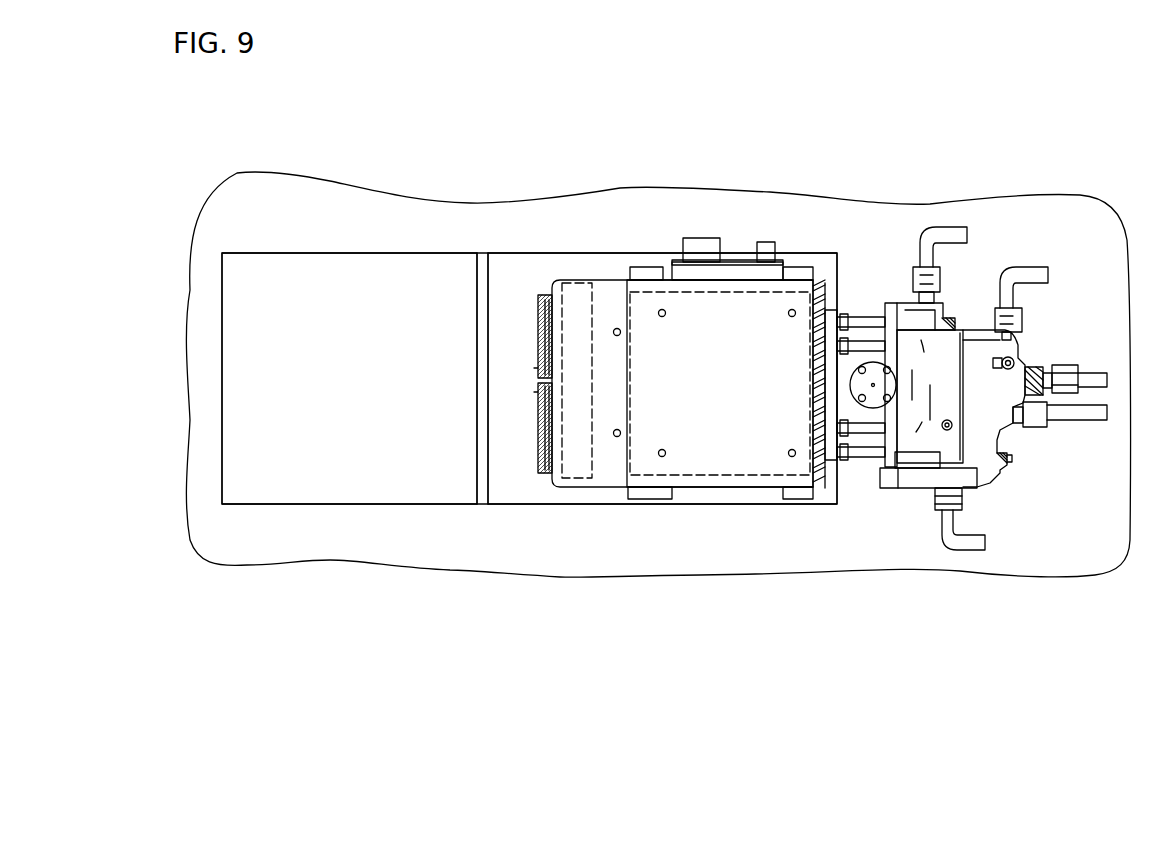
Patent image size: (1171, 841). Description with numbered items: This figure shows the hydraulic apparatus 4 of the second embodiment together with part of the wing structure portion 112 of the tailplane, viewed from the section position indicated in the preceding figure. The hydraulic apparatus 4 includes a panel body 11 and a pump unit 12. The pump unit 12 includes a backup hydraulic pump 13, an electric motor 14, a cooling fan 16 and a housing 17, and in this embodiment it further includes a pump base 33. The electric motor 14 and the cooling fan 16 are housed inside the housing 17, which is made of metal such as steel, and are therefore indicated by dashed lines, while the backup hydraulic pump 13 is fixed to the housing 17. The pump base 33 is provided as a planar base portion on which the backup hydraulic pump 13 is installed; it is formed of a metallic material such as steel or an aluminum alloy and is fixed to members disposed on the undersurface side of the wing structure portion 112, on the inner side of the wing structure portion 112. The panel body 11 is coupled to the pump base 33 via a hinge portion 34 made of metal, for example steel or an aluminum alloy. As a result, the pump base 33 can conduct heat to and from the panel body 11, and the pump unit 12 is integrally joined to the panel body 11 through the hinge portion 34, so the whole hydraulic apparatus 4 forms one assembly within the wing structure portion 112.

The hydraulic apparatus 4 is at (529, 378).
The panel body 11 is at (300, 460).
The pump unit 12 is at (984, 381).
The backup hydraulic pump 13 is at (930, 470).
The electric motor 14 is at (722, 292).
The cooling fan 16 is at (583, 283).
The housing 17 is at (747, 480).
The pump base 33 is at (595, 497).
The hinge portion 34 is at (480, 493).
The wing structure portion 112 is at (1087, 548).